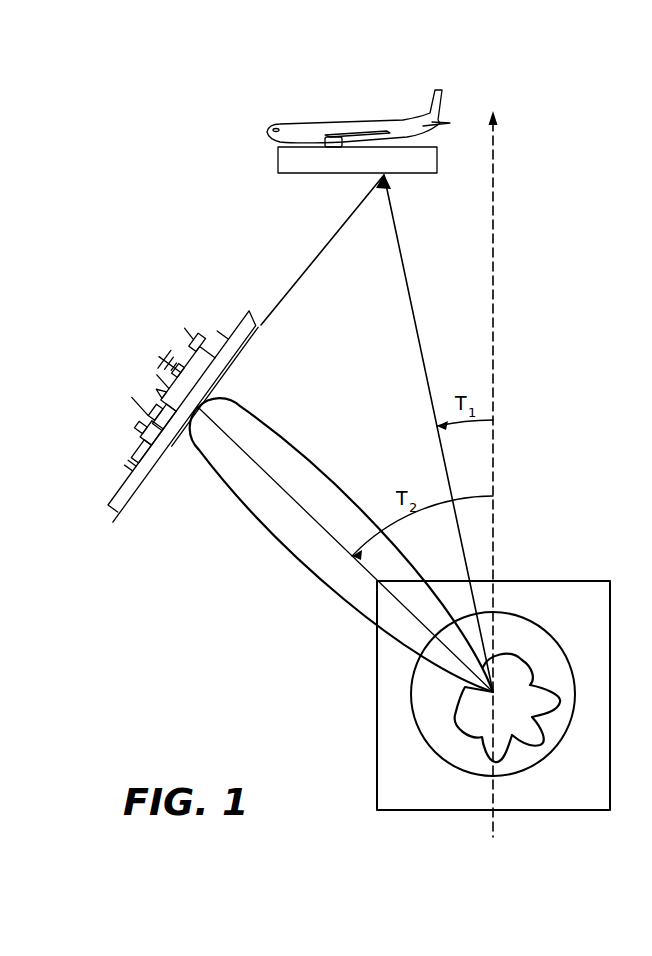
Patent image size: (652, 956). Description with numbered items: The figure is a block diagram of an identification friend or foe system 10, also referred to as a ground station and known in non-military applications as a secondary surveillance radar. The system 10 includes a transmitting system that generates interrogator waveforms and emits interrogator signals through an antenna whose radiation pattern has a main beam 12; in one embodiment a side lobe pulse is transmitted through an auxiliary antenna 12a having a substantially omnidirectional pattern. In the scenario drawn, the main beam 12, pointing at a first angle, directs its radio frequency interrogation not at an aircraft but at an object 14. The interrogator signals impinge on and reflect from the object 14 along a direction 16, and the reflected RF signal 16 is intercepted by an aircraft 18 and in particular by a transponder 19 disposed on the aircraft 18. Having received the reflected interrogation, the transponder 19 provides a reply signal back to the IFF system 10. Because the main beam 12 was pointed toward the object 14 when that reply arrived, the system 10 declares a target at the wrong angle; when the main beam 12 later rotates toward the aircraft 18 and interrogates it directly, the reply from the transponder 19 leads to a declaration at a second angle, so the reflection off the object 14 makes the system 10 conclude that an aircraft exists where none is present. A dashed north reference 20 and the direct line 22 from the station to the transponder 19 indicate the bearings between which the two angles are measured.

The identification friend or foe (IFF) system 10 is at (556, 581).
The main beam 12 is at (235, 492).
The auxiliary antenna 12a is at (410, 716).
The object 14 is at (150, 393).
The reflected RF signal 16 is at (310, 268).
The aircraft 18 is at (308, 122).
The transponder 19 is at (278, 160).
The north reference line 20 is at (498, 213).
The transponder reply path 22 is at (407, 280).